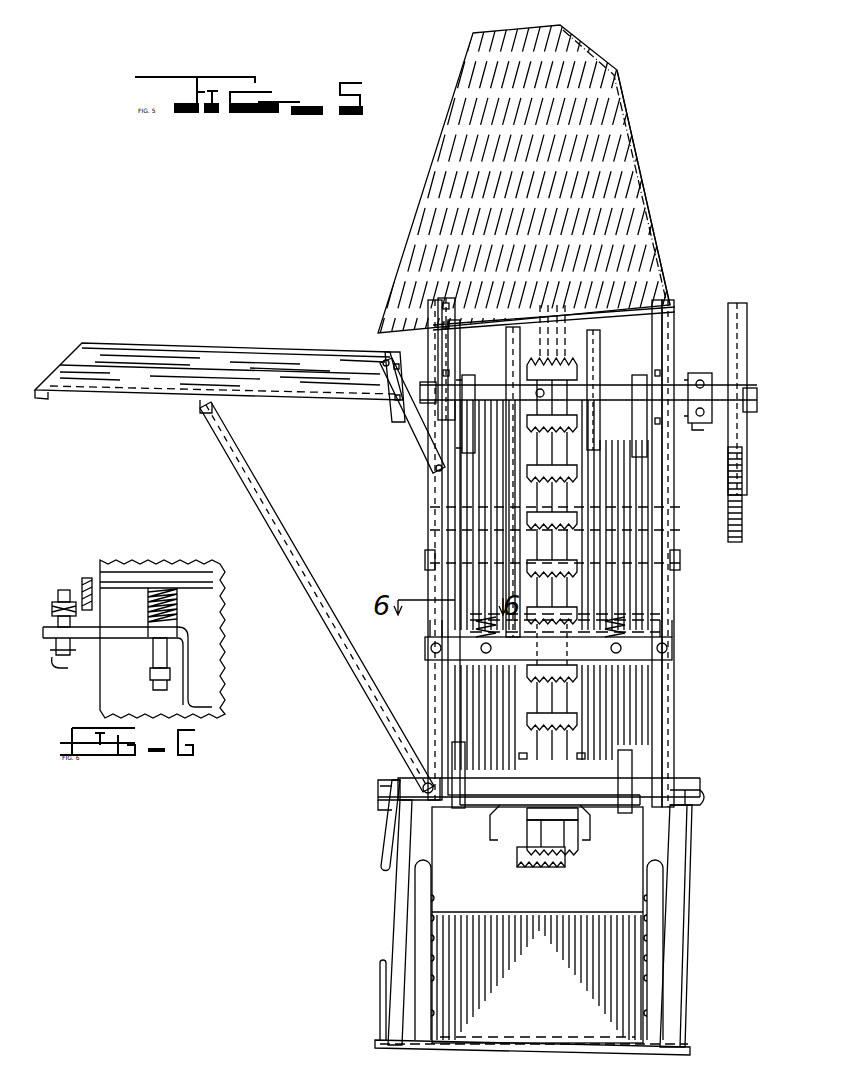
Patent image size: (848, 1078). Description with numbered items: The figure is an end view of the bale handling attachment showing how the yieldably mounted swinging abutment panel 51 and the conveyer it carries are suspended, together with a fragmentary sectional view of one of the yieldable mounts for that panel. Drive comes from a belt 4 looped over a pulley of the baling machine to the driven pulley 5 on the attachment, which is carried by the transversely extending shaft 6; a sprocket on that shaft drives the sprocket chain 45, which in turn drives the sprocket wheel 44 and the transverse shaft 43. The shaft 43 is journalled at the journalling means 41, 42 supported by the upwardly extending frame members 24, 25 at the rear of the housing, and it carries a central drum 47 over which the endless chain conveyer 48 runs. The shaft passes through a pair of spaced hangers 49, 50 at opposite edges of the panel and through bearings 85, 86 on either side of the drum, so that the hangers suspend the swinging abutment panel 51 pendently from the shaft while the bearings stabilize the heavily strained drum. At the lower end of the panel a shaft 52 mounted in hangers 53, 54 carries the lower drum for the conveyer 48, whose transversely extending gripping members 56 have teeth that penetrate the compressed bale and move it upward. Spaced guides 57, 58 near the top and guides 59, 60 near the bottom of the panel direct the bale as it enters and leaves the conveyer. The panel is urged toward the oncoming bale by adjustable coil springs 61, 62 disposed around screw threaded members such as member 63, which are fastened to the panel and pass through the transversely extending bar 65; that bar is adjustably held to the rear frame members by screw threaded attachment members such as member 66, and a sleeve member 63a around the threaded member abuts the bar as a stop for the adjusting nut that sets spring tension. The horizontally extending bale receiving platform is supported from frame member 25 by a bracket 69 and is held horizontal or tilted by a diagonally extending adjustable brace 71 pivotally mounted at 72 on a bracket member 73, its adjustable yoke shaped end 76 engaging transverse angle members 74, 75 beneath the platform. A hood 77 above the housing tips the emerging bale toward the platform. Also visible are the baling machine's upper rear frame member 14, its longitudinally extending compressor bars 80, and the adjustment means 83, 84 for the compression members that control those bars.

In FIG. 5, the belt 4 is at (740, 535).
In FIG. 5, the driven pulley 5 is at (743, 472).
In FIG. 5, the transversely extending shaft 6 is at (758, 398).
In FIG. 5, the upper rear frame member 14 is at (400, 870).
In FIG. 5, the upwardly extending frame member 24 is at (672, 317).
In FIG. 5, the upwardly extending frame member 25 is at (393, 328).
In FIG. 6, the upwardly extending frame member 25 is at (93, 578).
In FIG. 5, the journalling means 41 is at (457, 372).
In FIG. 5, the journalling means 42 is at (676, 378).
In FIG. 5, the transverse shaft 43 is at (608, 388).
In FIG. 5, the sprocket wheel 44 is at (708, 378).
In FIG. 5, the sprocket chain 45 is at (696, 427).
In FIG. 5, the drum 47 is at (535, 392).
In FIG. 5, the endless chain conveyer 48 is at (575, 715).
In FIG. 5, the hanger 49 is at (465, 425).
In FIG. 5, the hanger 50 is at (645, 450).
In FIG. 5, the swinging abutment panel 51 is at (430, 500).
In FIG. 5, the shaft 52 is at (500, 805).
In FIG. 5, the hanger 53 is at (458, 810).
In FIG. 5, the hanger 54 is at (625, 815).
In FIG. 5, the gripping member 56 is at (572, 758).
In FIG. 5, the guide 57 is at (600, 335).
In FIG. 5, the guide 58 is at (537, 323).
In FIG. 5, the guide 59 is at (567, 820).
In FIG. 5, the guide 60 is at (515, 867).
In FIG. 5, the adjustable coil spring 61 is at (470, 628).
In FIG. 6, the adjustable coil spring 61 is at (177, 605).
In FIG. 5, the adjustable coil spring 62 is at (640, 632).
In FIG. 6, the screw threaded member 63 is at (185, 690).
In FIG. 6, the sleeve member 63a is at (153, 662).
In FIG. 6, the transversely extending bar 65 is at (78, 645).
In FIG. 6, the screw threaded adjustable attachment member 66 is at (63, 592).
In FIG. 5, the bracket 69 is at (410, 420).
In FIG. 5, the diagonally extending adjustable brace 71 is at (347, 681).
In FIG. 5, the pivot 72 is at (445, 802).
In FIG. 5, the bracket member 73 is at (395, 790).
In FIG. 5, the transverse angle member 74 is at (199, 412).
In FIG. 5, the transverse angle member 75 is at (42, 398).
In FIG. 5, the adjustable yoke shaped end 76 is at (270, 507).
In FIG. 5, the hood 77 is at (607, 124).
In FIG. 5, the longitudinally extending compressor bar 80 is at (425, 880).
In FIG. 5, the adjustment means 83 is at (423, 795).
In FIG. 5, the adjustment means 84 is at (381, 1005).
In FIG. 5, the bearing 85 is at (475, 455).
In FIG. 5, the bearing 86 is at (600, 385).